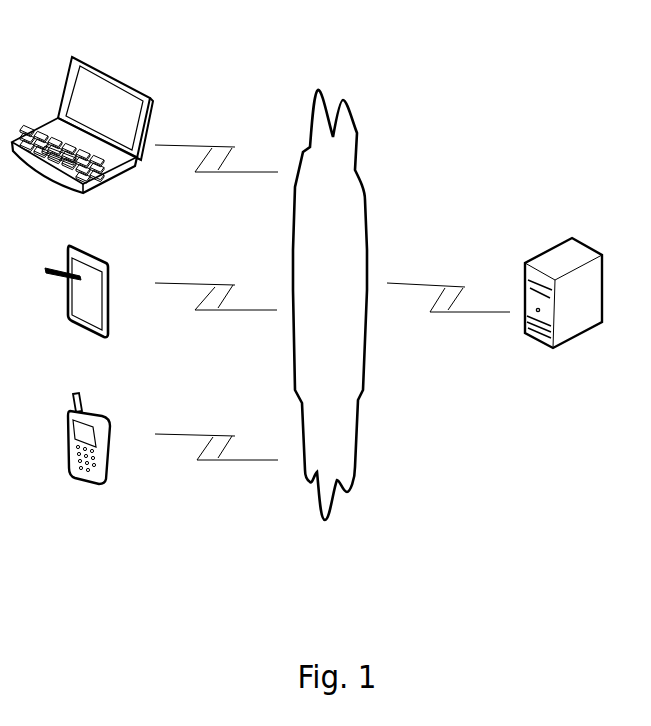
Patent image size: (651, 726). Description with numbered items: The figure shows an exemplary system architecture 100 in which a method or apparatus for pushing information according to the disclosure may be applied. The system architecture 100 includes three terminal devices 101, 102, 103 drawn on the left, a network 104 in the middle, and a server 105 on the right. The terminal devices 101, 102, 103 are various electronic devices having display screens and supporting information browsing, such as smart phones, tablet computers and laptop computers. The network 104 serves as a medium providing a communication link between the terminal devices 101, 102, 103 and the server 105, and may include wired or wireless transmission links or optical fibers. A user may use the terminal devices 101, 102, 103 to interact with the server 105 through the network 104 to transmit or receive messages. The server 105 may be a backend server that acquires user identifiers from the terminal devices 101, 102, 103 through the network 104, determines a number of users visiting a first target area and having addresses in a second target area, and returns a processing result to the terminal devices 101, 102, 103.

The system architecture 100 is at (573, 33).
The terminal device 101 is at (89, 455).
The terminal device 102 is at (76, 307).
The terminal device 103 is at (82, 140).
The network 104 is at (330, 305).
The server 105 is at (563, 309).